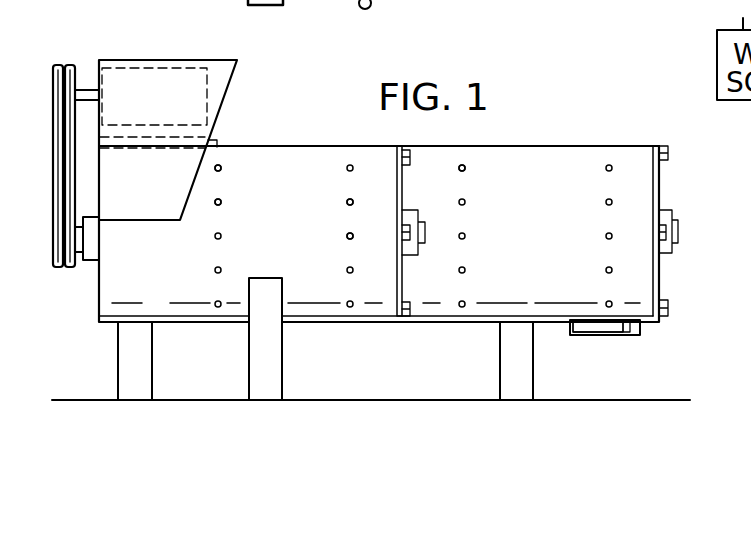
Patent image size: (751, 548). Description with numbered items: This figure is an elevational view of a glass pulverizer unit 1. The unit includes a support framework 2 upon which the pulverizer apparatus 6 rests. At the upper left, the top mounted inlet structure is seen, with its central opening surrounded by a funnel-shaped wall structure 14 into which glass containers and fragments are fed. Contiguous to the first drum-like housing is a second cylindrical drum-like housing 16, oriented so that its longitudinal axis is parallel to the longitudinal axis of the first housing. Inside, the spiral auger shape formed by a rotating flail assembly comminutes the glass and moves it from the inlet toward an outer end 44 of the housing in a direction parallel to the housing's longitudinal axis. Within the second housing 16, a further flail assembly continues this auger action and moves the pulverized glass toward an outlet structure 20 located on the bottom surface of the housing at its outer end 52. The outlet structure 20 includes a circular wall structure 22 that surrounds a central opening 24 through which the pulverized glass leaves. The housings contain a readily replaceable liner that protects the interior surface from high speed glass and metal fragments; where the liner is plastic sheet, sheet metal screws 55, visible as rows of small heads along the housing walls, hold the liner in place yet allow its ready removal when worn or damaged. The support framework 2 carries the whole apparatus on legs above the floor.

The glass pulverizer unit 1 is at (86, 338).
The support framework 2 is at (152, 355).
The pulverizer apparatus 6 is at (158, 0).
The funnel-shaped wall structure 14 is at (218, 89).
The second cylindrical drum-like housing 16 is at (305, 176).
The outlet structure 20 is at (646, 327).
The circular wall structure 22 is at (618, 326).
The central opening 24 is at (598, 340).
The outer end 44 is at (443, 178).
The outer end 52 is at (662, 184).
The sheet metal screws 55 is at (222, 170).